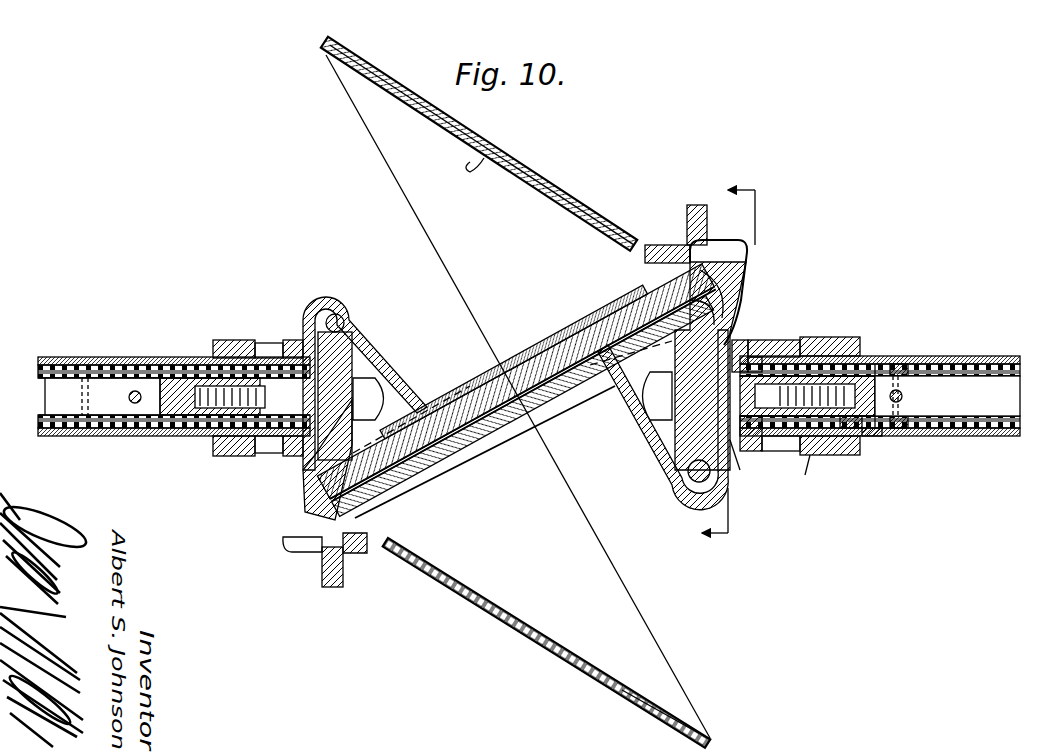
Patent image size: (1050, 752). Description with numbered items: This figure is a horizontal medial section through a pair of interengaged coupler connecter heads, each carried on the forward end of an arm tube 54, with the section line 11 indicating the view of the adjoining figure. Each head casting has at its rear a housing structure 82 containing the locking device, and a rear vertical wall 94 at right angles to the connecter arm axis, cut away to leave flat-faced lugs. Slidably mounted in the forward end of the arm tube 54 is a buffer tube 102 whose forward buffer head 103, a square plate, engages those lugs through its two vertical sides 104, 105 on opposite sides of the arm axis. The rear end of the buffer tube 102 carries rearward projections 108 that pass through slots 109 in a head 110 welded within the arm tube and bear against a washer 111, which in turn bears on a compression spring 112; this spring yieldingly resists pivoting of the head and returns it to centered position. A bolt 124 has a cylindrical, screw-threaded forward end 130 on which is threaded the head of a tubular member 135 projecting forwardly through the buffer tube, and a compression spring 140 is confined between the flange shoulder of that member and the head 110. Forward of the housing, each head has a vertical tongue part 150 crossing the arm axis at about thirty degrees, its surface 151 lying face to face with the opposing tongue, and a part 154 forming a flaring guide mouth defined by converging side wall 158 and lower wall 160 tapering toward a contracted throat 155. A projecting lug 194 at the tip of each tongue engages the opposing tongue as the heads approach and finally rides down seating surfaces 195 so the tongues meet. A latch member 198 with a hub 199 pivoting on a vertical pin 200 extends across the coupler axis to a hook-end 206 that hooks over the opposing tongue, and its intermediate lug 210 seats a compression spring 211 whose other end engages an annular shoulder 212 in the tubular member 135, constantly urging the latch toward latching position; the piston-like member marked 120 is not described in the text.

The section line 11- 11 is at (747, 363).
The arm tube 54 is at (70, 357).
The housing structure 82 is at (388, 330).
The rear vertical wall 94 is at (732, 462).
The buffer tube 102 is at (210, 437).
The buffer head 103 is at (738, 352).
The vertical side of buffer head plate 104 is at (762, 340).
The vertical side of buffer head plate 105 is at (765, 450).
The rearward projections 108 is at (140, 364).
The slots 109 is at (900, 357).
The head 110 is at (916, 437).
The washer 111 is at (918, 357).
The compression spring 112 is at (100, 436).
The piston 120 is at (947, 396).
The bolt 124 is at (880, 356).
The forward end of bolt 130 is at (842, 438).
The tubular member 135 is at (820, 356).
The compression spring 140 is at (832, 440).
The tongue part 150 is at (532, 345).
The tongue surface 151 is at (617, 300).
The guide mouth part 154 is at (549, 181).
The contracted throat 155 is at (639, 242).
The side wall of guide mouth 158 is at (474, 156).
The lower wall of guide mouth 160 is at (413, 203).
The projecting lug 194 is at (712, 290).
The seating surfaces 195 is at (720, 305).
The latch member 198 is at (728, 270).
The hub 199 is at (690, 480).
The vertical pin 200 is at (697, 482).
The hook-end 206 is at (693, 240).
The lug 210 is at (722, 340).
The compression spring 211 is at (810, 456).
The annular shoulder 212 is at (232, 456).